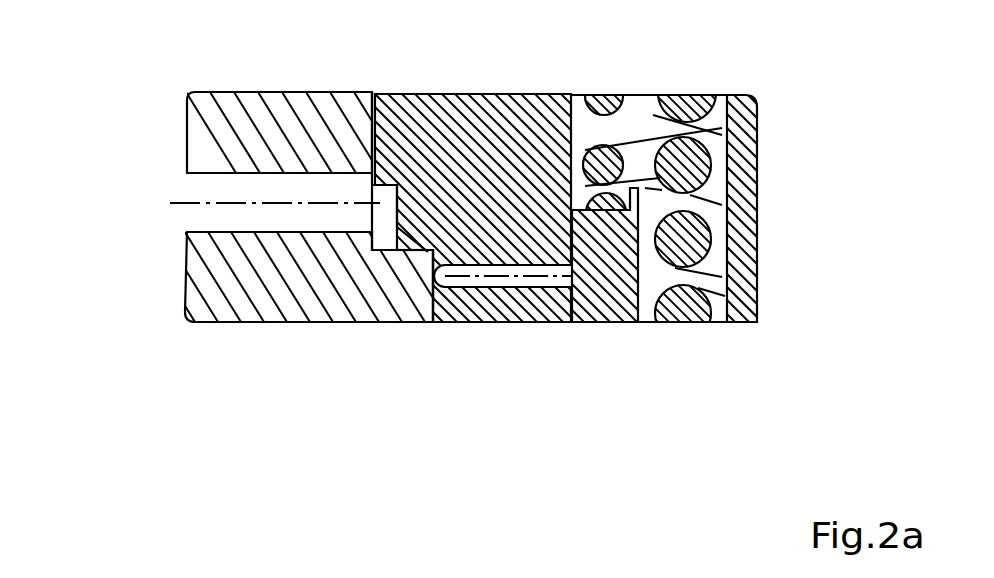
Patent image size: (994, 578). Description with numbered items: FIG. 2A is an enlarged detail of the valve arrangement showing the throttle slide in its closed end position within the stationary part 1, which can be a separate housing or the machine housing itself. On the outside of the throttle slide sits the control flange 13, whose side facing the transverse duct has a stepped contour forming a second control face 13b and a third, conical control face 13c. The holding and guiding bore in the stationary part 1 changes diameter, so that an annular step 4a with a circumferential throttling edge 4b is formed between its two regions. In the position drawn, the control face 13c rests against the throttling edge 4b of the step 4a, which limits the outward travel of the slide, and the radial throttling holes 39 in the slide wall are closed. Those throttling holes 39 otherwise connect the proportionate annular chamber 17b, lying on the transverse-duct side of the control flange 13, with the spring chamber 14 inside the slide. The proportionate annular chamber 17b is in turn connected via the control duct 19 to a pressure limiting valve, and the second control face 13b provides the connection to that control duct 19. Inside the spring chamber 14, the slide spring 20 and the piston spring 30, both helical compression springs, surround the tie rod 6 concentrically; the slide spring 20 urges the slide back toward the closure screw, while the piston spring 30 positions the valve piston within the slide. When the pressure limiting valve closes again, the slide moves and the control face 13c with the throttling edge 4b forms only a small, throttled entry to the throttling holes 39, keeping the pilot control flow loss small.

The stationary part 1 is at (270, 122).
The control duct 19 is at (248, 200).
The control flange 13 is at (442, 122).
The second control face 13b is at (385, 188).
The proportionate annular chamber 17b is at (387, 233).
The third control face 13c is at (410, 250).
The annular step 4a is at (410, 260).
The circumferential throttling edge 4b is at (433, 256).
The radial throttling holes 39 is at (535, 277).
The piston spring 30 is at (604, 104).
The slide spring 20 is at (680, 163).
The spring chamber 14 is at (633, 121).
The tie rod 6 is at (740, 136).